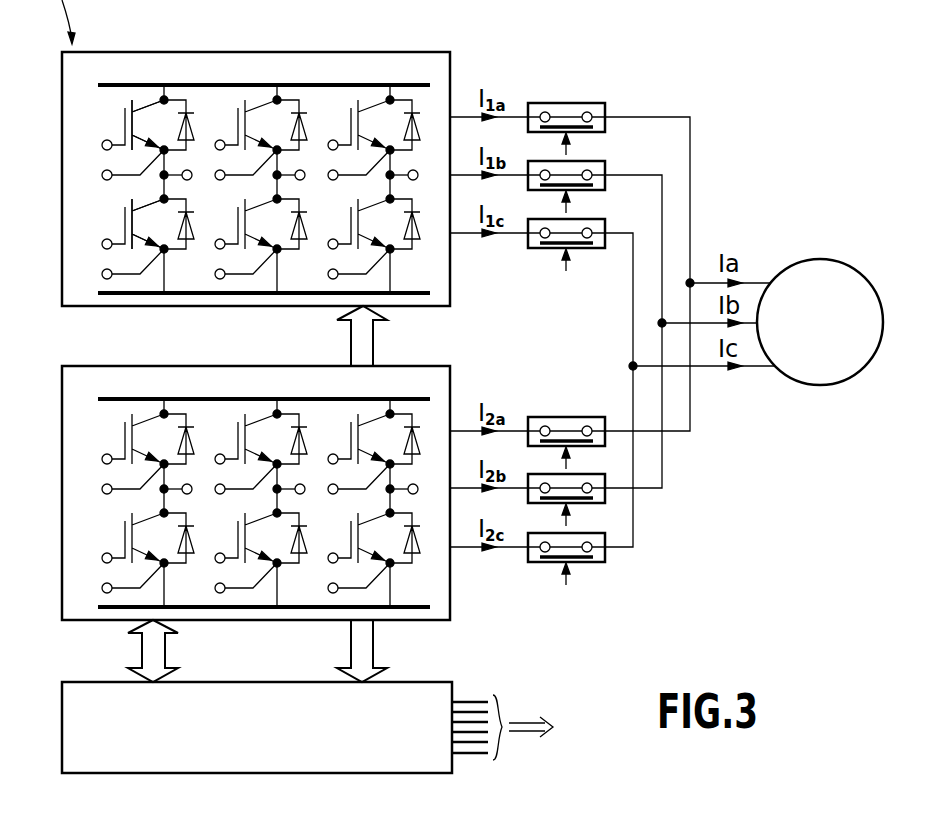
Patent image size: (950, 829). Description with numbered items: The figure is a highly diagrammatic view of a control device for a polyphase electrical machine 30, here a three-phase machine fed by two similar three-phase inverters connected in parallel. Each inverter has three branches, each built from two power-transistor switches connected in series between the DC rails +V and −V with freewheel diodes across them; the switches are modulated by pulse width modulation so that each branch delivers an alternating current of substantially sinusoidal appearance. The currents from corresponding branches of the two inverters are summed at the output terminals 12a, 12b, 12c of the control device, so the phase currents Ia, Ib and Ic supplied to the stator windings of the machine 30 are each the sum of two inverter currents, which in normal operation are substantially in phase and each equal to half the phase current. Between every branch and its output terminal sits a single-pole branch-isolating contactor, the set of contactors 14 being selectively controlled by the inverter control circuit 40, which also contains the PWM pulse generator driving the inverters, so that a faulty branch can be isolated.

The output terminal 12a is at (693, 280).
The output terminal 12b is at (659, 323).
The output terminal 12c is at (630, 367).
The branch-isolating contactors 14 is at (520, 727).
The three-phase electrical machine 30 is at (815, 258).
The inverter control circuit 40 is at (275, 732).